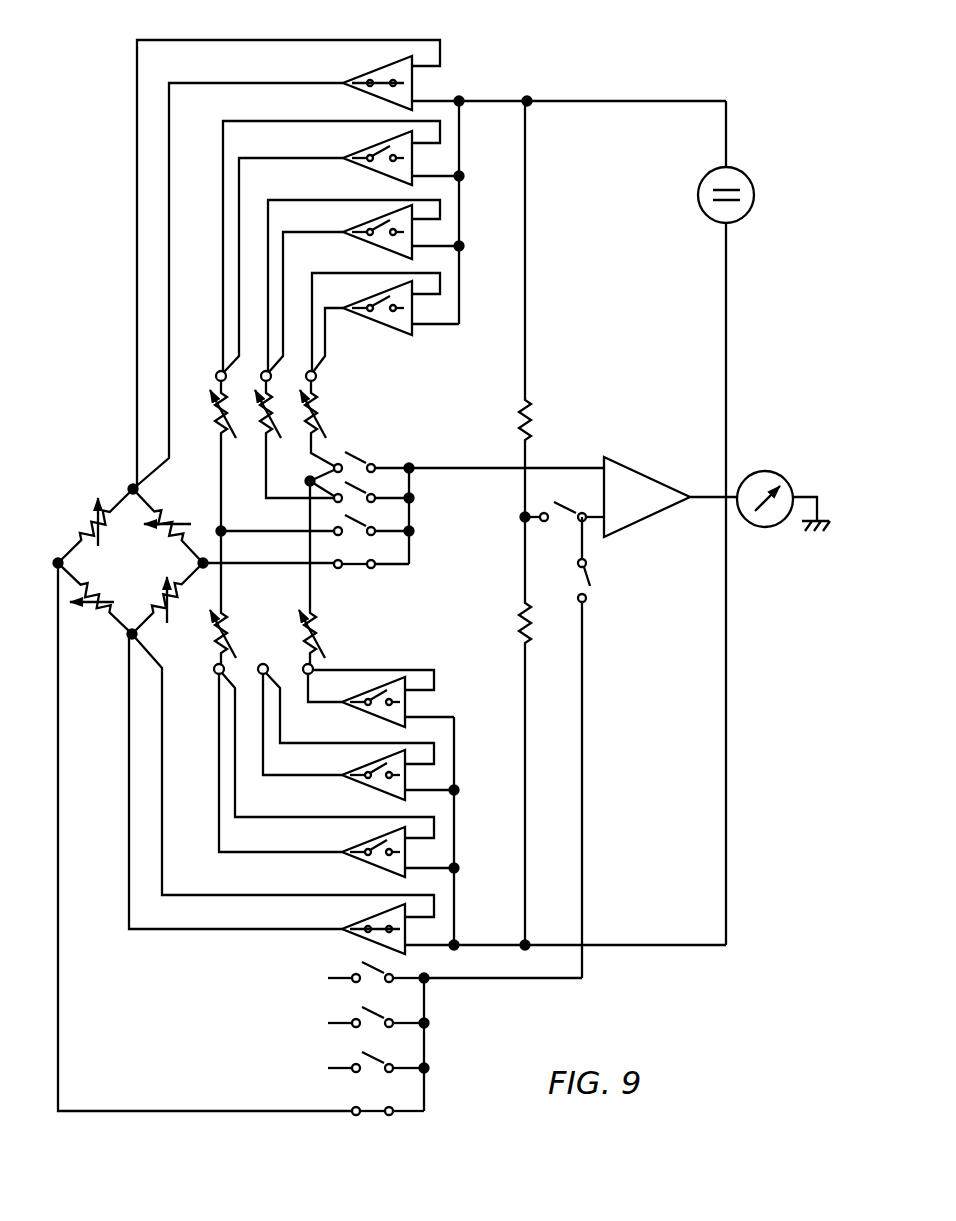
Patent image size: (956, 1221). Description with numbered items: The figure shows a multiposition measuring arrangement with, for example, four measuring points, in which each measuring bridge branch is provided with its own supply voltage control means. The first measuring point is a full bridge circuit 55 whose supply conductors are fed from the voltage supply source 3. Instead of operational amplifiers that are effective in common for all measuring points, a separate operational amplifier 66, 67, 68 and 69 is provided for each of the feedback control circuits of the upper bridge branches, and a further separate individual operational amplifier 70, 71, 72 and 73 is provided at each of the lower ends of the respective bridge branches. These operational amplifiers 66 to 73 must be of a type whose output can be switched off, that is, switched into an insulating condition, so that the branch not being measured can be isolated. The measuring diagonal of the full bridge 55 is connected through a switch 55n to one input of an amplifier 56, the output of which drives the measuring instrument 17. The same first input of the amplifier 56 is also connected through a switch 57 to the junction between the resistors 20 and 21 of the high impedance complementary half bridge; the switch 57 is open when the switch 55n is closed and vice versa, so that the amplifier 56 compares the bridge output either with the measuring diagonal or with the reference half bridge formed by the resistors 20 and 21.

The voltage supply source 3 is at (746, 186).
The measuring instrument 17 is at (771, 472).
The resistor 20 is at (534, 415).
The resistor 21 is at (518, 627).
The full bridge circuit 55 is at (147, 577).
The switch 55n is at (590, 586).
The amplifier 56 is at (641, 480).
The switch 57 is at (576, 506).
The operational amplifier 66 is at (386, 325).
The operational amplifier 67 is at (370, 243).
The operational amplifier 68 is at (372, 170).
The operational amplifier 69 is at (372, 93).
The operational amplifier 70 is at (352, 710).
The operational amplifier 71 is at (360, 785).
The operational amplifier 72 is at (357, 860).
The operational amplifier 73 is at (352, 937).